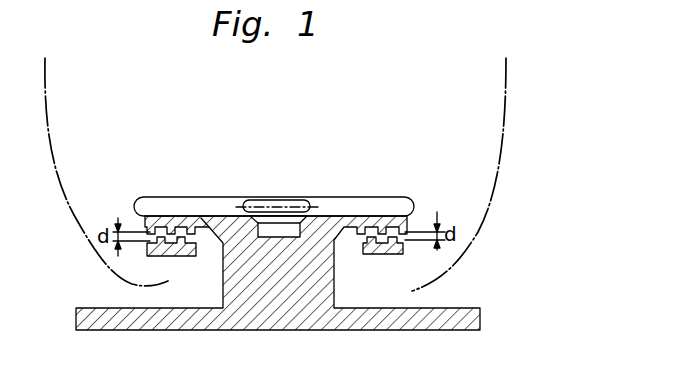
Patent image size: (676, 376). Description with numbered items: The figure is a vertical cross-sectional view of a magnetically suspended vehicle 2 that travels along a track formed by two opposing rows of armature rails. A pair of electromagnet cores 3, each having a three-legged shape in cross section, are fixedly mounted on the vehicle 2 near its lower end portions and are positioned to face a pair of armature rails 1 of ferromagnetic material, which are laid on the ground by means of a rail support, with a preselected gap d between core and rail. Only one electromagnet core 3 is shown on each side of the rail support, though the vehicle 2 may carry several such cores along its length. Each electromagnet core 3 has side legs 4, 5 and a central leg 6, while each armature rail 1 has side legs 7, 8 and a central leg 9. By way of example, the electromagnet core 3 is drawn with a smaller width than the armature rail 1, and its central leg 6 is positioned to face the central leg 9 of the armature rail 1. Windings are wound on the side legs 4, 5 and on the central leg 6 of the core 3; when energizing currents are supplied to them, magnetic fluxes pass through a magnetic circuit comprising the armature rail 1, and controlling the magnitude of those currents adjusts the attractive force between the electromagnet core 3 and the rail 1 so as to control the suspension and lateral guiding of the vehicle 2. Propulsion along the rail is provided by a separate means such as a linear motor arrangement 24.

The armature rail 1 is at (148, 236).
The magnetically suspended vehicle 2 is at (498, 166).
The electromagnet core 3 is at (149, 249).
The side leg 4 is at (365, 254).
The side leg 5 is at (397, 252).
The central leg 6 is at (386, 255).
The side leg 7 is at (362, 215).
The side leg 8 is at (404, 215).
The central leg 9 is at (381, 215).
The linear motor arrangement 24 is at (285, 195).